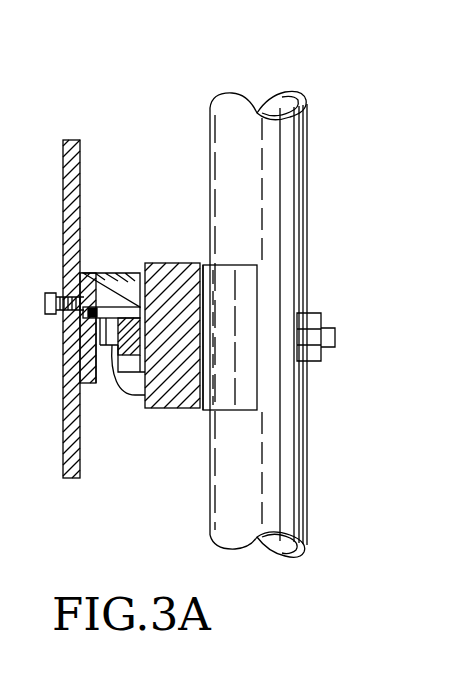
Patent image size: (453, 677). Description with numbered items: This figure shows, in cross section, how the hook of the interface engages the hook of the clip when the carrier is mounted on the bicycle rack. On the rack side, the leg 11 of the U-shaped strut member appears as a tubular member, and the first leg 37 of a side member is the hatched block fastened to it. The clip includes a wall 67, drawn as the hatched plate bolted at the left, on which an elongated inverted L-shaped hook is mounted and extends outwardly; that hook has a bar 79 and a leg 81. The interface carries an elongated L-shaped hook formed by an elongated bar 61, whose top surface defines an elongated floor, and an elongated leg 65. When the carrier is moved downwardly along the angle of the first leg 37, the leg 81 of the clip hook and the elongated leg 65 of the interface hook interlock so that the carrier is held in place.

The leg 11 is at (290, 173).
The first leg 37 is at (166, 283).
The elongated bar 61 is at (132, 378).
The elongated leg 65 is at (112, 345).
The wall 67 is at (100, 340).
The bar 79 is at (130, 292).
The leg 81 is at (122, 283).